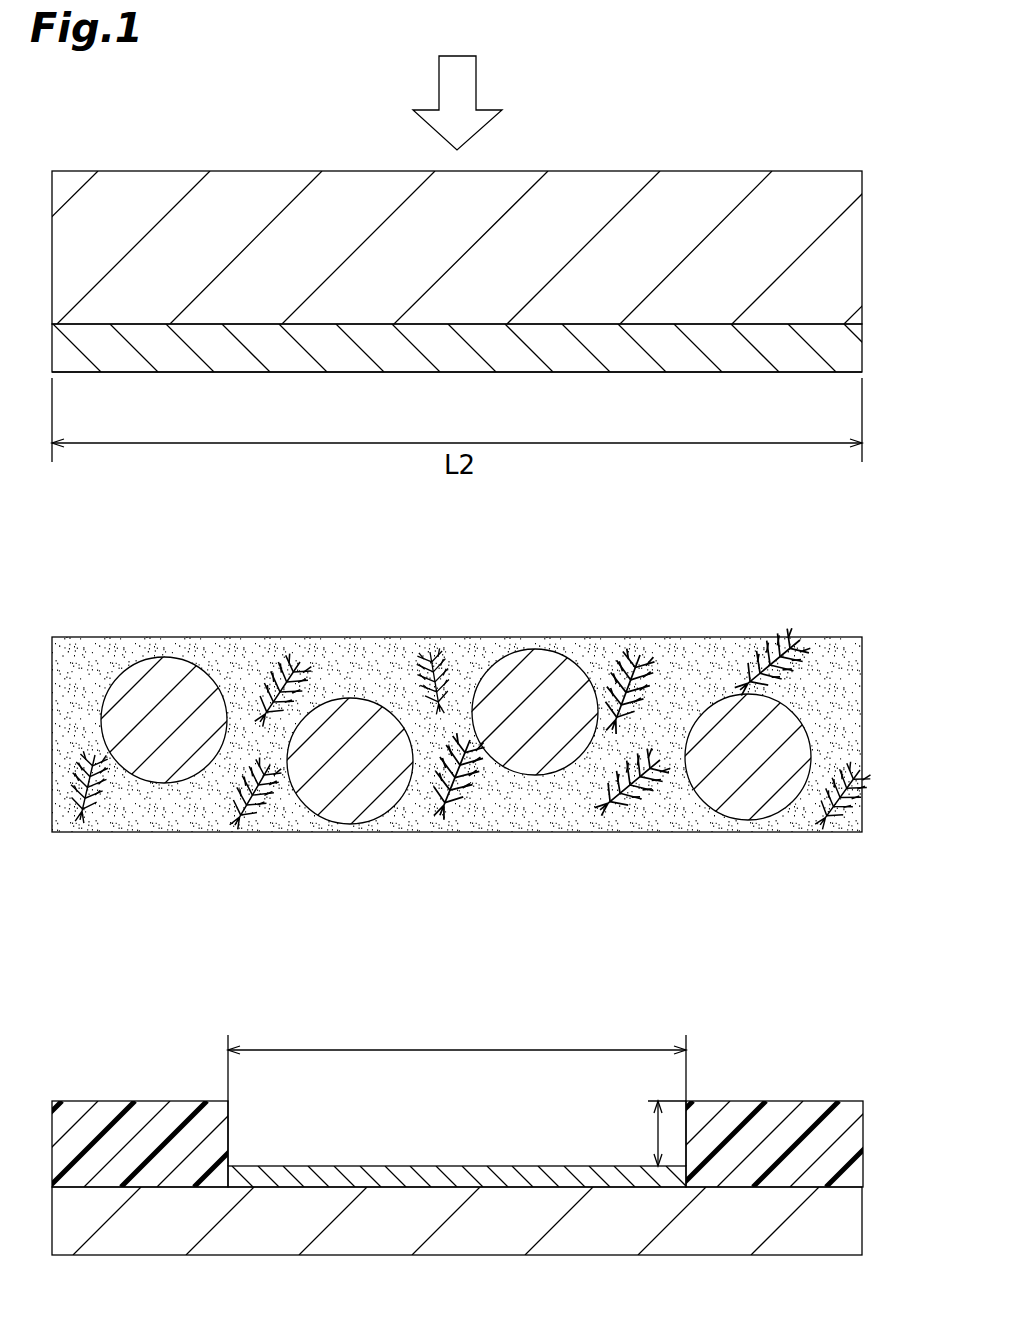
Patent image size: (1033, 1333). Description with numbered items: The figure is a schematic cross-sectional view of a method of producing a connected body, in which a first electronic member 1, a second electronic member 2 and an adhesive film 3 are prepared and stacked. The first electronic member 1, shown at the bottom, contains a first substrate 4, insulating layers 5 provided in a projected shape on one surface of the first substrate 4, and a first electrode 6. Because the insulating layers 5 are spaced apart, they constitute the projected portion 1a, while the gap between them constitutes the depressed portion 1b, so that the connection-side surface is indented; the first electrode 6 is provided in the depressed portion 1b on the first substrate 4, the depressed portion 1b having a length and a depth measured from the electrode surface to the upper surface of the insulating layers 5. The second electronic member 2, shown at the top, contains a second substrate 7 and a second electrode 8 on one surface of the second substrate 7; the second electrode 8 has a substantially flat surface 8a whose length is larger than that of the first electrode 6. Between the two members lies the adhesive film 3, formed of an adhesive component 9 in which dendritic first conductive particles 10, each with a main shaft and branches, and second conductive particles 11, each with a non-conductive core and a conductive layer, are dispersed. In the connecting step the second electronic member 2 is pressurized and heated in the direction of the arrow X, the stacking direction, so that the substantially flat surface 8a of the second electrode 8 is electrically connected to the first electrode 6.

The first electronic member 1 is at (475, 1131).
The projected portion 1a is at (160, 1090).
The depressed portion 1b is at (460, 1152).
The second electronic member 2 is at (499, 302).
The adhesive film 3 is at (501, 736).
The first substrate 4 is at (848, 1229).
The insulating layer 5 is at (74, 1112).
The first electrode 6 is at (320, 1180).
The second substrate 7 is at (850, 248).
The second electrode 8 is at (850, 351).
The substantially flat surface 8a is at (748, 374).
The adhesive component 9 is at (852, 690).
The first conductive particles 10 is at (284, 664).
The second conductive particles 11 is at (163, 658).
The arrow X is at (476, 70).